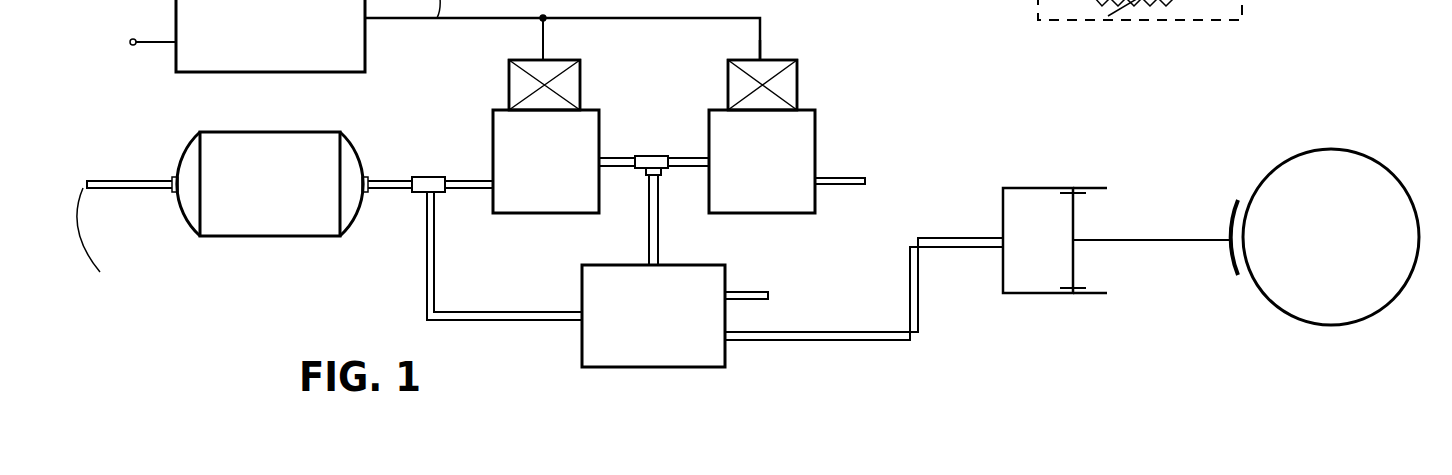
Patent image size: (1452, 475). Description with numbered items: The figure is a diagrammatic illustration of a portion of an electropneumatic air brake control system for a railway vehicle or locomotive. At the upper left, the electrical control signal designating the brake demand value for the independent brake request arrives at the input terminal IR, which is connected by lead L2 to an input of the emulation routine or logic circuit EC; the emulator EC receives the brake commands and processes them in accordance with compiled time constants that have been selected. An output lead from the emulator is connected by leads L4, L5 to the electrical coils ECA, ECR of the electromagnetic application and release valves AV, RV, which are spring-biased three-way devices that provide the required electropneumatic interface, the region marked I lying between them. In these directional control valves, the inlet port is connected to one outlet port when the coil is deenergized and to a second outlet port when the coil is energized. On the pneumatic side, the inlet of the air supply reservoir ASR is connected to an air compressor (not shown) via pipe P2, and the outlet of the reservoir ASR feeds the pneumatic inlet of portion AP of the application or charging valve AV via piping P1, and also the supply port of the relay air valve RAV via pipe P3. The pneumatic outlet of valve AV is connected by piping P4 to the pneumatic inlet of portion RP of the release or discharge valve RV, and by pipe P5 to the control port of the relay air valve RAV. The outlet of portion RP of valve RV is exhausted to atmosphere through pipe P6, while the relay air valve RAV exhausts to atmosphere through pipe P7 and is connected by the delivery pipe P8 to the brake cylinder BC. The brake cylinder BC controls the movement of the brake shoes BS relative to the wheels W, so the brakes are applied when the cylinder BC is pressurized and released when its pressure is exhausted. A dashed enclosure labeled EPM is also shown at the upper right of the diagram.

The emulation routine or logic circuit EC is at (280, 29).
The input terminal IR is at (130, 46).
The lead L2 is at (157, 42).
The lead L4 is at (546, 38).
The lead L5 is at (760, 38).
The electrical coil ECA is at (509, 62).
The electrical coil ECR is at (797, 62).
The application or charging valve AV is at (509, 107).
The release or discharge valve RV is at (797, 107).
The pneumatic portion of application valve AP is at (493, 137).
The pneumatic portion of release valve RP is at (815, 137).
The interface I is at (647, 84).
The piping P4 is at (627, 157).
The pipe or conduit P5 is at (649, 237).
The J-1 relay air valve RAV is at (582, 288).
The pipe or conduit P7 is at (753, 290).
The delivery pipe P8 is at (918, 320).
The brake cylinder BC is at (1037, 188).
The brake shoes BS is at (1233, 212).
The wheels W is at (1352, 152).
The air supply reservoir ASR is at (300, 196).
The pipe or conduit P2 is at (133, 180).
The piping P1 is at (403, 193).
The pipe or conduit P3 is at (427, 277).
The pipe or conduit P6 is at (848, 185).
The electro-pneumatic module EPM is at (1152, 22).